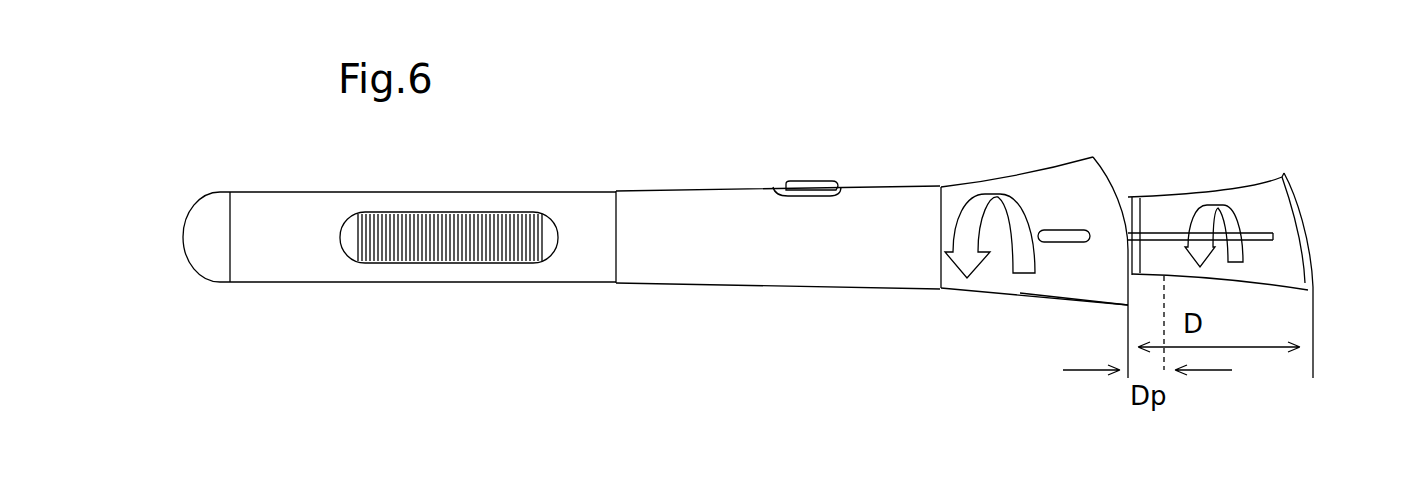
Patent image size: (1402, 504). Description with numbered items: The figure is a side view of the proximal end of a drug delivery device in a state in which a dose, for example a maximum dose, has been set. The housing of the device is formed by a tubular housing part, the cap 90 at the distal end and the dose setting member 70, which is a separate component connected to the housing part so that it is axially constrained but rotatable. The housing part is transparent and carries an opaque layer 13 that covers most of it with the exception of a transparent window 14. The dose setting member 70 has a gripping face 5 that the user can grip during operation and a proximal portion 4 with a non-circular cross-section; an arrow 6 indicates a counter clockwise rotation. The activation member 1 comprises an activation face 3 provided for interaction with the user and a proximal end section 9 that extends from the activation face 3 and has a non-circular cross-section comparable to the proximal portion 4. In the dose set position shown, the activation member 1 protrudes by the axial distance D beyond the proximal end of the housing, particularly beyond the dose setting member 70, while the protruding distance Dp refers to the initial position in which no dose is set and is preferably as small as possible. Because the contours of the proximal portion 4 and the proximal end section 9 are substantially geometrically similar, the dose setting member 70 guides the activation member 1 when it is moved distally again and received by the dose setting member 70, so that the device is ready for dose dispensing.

The cap 90 is at (277, 205).
The opaque layer 13 is at (755, 212).
The transparent window 14 is at (818, 178).
The gripping face 5 is at (1067, 168).
The dose setting member 70 is at (1107, 175).
The arrow (counter clockwise) 6 is at (1027, 263).
The proximal portion of the dose setting member 4 is at (1097, 280).
The activation member 1 is at (1228, 193).
The proximal end section of the activation member 9 is at (1263, 188).
The activation face 3 is at (1305, 228).